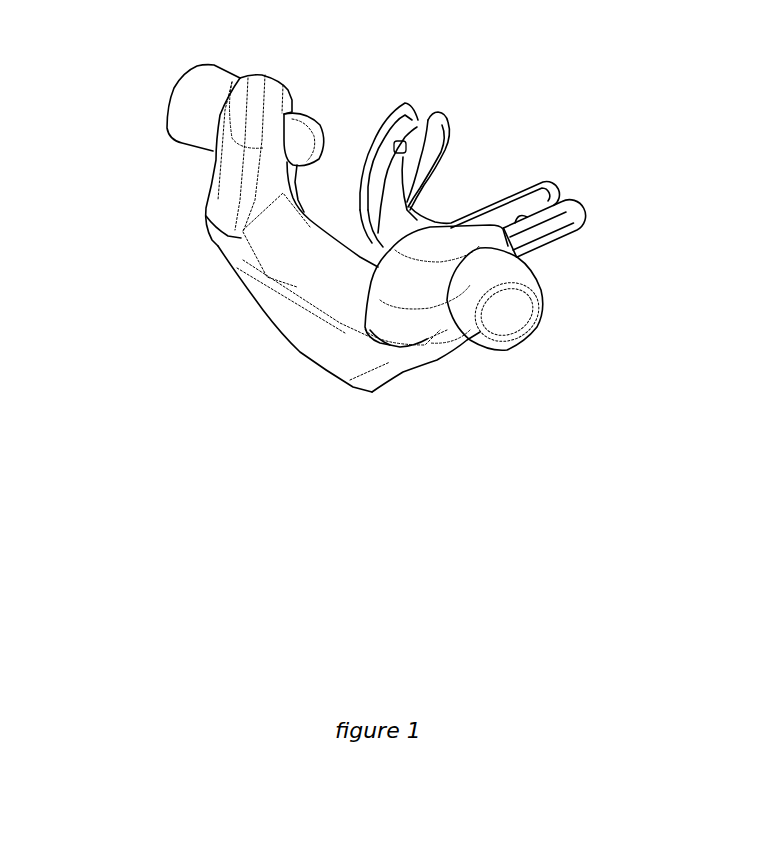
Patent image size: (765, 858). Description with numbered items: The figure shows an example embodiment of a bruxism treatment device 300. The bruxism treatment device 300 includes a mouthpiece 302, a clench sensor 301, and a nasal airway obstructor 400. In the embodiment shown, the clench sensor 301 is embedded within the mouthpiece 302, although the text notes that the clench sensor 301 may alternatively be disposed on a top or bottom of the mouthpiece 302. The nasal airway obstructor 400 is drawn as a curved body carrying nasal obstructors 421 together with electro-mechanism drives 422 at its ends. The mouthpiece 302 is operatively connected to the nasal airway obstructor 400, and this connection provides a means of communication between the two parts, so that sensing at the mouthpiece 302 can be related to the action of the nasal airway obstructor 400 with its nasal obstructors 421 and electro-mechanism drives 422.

The bruxism treatment device 300 is at (207, 330).
The clench sensor 301 is at (427, 113).
The mouthpiece 302 is at (532, 247).
The nasal airway obstructor 400 is at (337, 343).
The nasal obstructor 421 is at (305, 128).
The electro-mechanism drive 422 is at (194, 136).